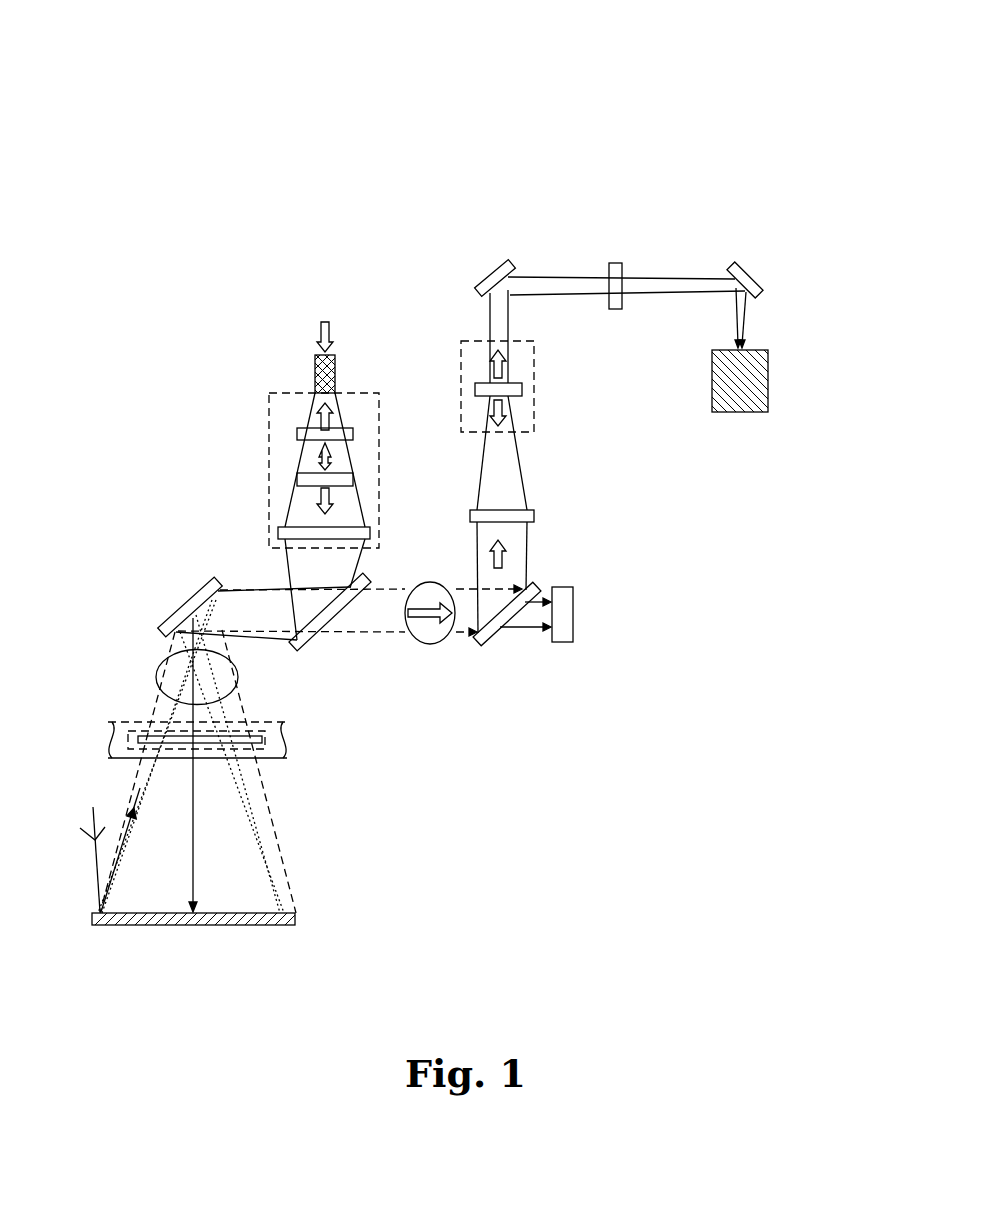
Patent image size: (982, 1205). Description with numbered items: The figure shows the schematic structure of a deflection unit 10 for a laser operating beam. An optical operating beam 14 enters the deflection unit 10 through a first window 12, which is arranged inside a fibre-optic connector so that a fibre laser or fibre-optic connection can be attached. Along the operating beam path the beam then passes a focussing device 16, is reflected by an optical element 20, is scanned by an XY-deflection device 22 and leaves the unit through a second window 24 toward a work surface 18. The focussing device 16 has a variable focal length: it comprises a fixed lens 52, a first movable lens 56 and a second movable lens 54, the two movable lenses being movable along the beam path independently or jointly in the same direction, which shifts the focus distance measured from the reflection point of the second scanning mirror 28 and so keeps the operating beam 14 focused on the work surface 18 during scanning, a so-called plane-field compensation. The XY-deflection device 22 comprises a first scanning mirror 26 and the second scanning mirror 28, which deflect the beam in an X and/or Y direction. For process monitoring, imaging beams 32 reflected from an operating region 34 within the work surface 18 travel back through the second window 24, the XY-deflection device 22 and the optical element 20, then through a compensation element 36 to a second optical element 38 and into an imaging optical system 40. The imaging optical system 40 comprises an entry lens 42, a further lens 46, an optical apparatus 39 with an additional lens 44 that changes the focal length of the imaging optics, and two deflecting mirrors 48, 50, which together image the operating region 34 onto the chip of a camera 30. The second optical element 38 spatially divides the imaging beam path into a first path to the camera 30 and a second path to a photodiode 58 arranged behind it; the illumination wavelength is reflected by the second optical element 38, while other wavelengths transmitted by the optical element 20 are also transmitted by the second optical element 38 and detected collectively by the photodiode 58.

The deflection unit 10 is at (128, 74).
The first window 12 is at (272, 343).
The optical operating beam 14 is at (331, 332).
The focussing device 16 is at (268, 456).
The work surface 18 is at (320, 864).
The optical element 20 is at (300, 648).
The XY-deflection device 22 is at (145, 553).
The second window 24 is at (262, 740).
The first scanning mirror 26 is at (215, 582).
The second scanning mirror 28 is at (158, 670).
The camera 30 is at (768, 378).
The imaging beams 32 is at (108, 913).
The operating region 34 is at (83, 893).
The compensation element 36 is at (430, 644).
The second optical element 38 is at (535, 588).
The optical apparatus 39 is at (534, 410).
The imaging optical system 40 is at (670, 207).
The entry lens 42 is at (534, 516).
The additional lens 44 is at (522, 389).
The lens 46 is at (615, 309).
The deflecting mirror 48 is at (508, 263).
The deflecting mirror 50 is at (760, 267).
The fixed lens 52 is at (370, 533).
The second movable lens 54 is at (353, 479).
The first movable lens 56 is at (353, 434).
The photodiode 58 is at (563, 642).